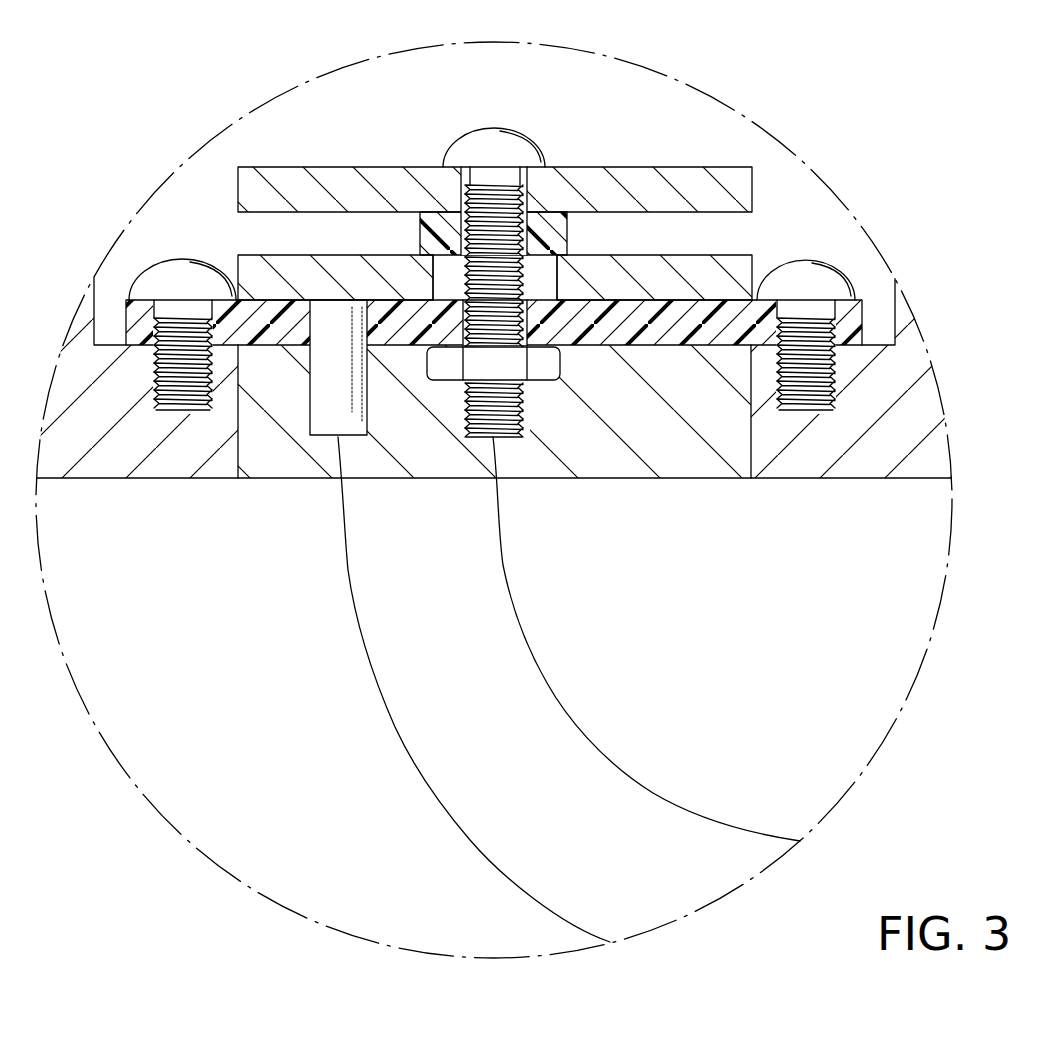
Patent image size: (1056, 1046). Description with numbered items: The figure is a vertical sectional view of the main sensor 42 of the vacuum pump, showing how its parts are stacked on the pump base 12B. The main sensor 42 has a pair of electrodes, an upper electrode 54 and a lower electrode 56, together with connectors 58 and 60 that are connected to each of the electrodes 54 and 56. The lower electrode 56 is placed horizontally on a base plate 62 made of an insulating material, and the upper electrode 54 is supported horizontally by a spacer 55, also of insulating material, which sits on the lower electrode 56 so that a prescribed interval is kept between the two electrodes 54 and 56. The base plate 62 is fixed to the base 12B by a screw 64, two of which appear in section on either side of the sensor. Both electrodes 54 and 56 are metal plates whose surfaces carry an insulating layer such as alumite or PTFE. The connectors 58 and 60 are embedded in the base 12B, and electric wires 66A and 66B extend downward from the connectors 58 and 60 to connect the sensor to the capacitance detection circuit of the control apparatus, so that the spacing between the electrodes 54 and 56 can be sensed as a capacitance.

The base 12B is at (829, 582).
The main sensor 42 is at (723, 130).
The upper electrode 54 is at (630, 182).
The spacer 55 is at (547, 230).
The lower electrode 56 is at (673, 260).
The connector 58 is at (496, 438).
The connector 60 is at (345, 425).
The base plate 62 is at (680, 328).
The screw 64 is at (796, 278).
The electric wire 66A is at (525, 640).
The electric wire 66B is at (392, 723).